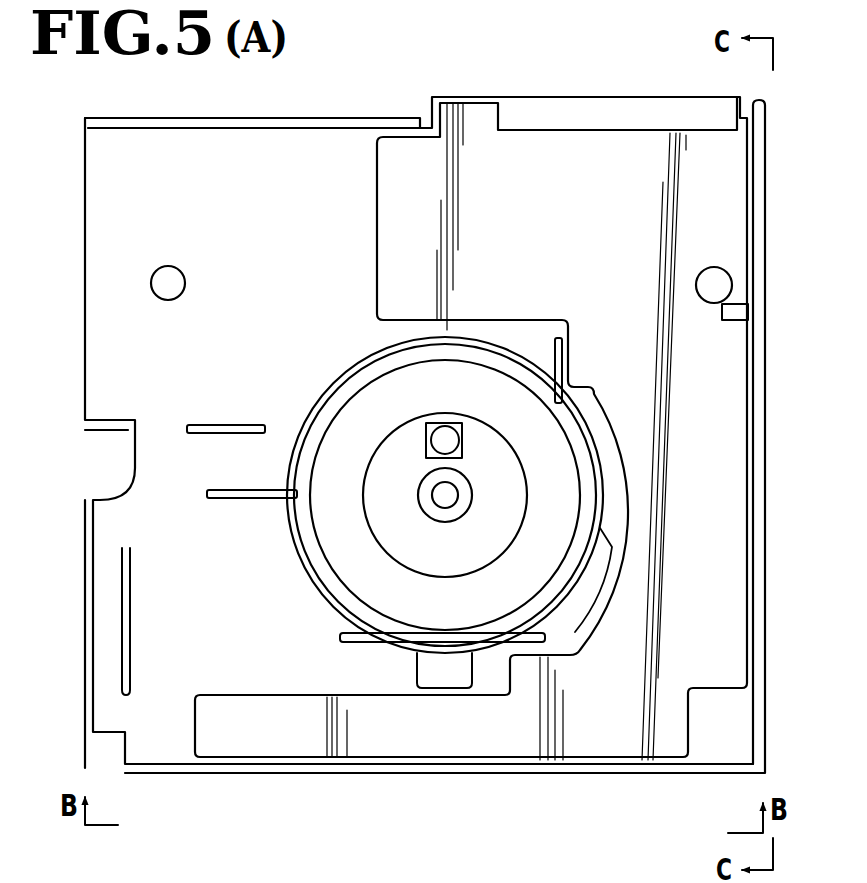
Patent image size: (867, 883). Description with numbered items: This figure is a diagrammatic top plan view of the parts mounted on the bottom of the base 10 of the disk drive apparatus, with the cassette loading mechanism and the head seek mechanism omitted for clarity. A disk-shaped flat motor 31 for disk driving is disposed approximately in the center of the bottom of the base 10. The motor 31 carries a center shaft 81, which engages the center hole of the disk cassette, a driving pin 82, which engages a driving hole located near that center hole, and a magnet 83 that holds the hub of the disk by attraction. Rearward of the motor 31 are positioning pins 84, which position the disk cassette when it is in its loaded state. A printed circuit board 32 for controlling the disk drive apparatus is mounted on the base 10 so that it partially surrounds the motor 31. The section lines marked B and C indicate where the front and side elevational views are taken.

The base 10 is at (749, 592).
The flat motor 31 is at (534, 572).
The printed circuit board 32 is at (403, 266).
The center shaft 81 is at (440, 497).
The driving pin 82 is at (430, 445).
The magnet 83 is at (495, 491).
The positioning pins 84 is at (168, 279).